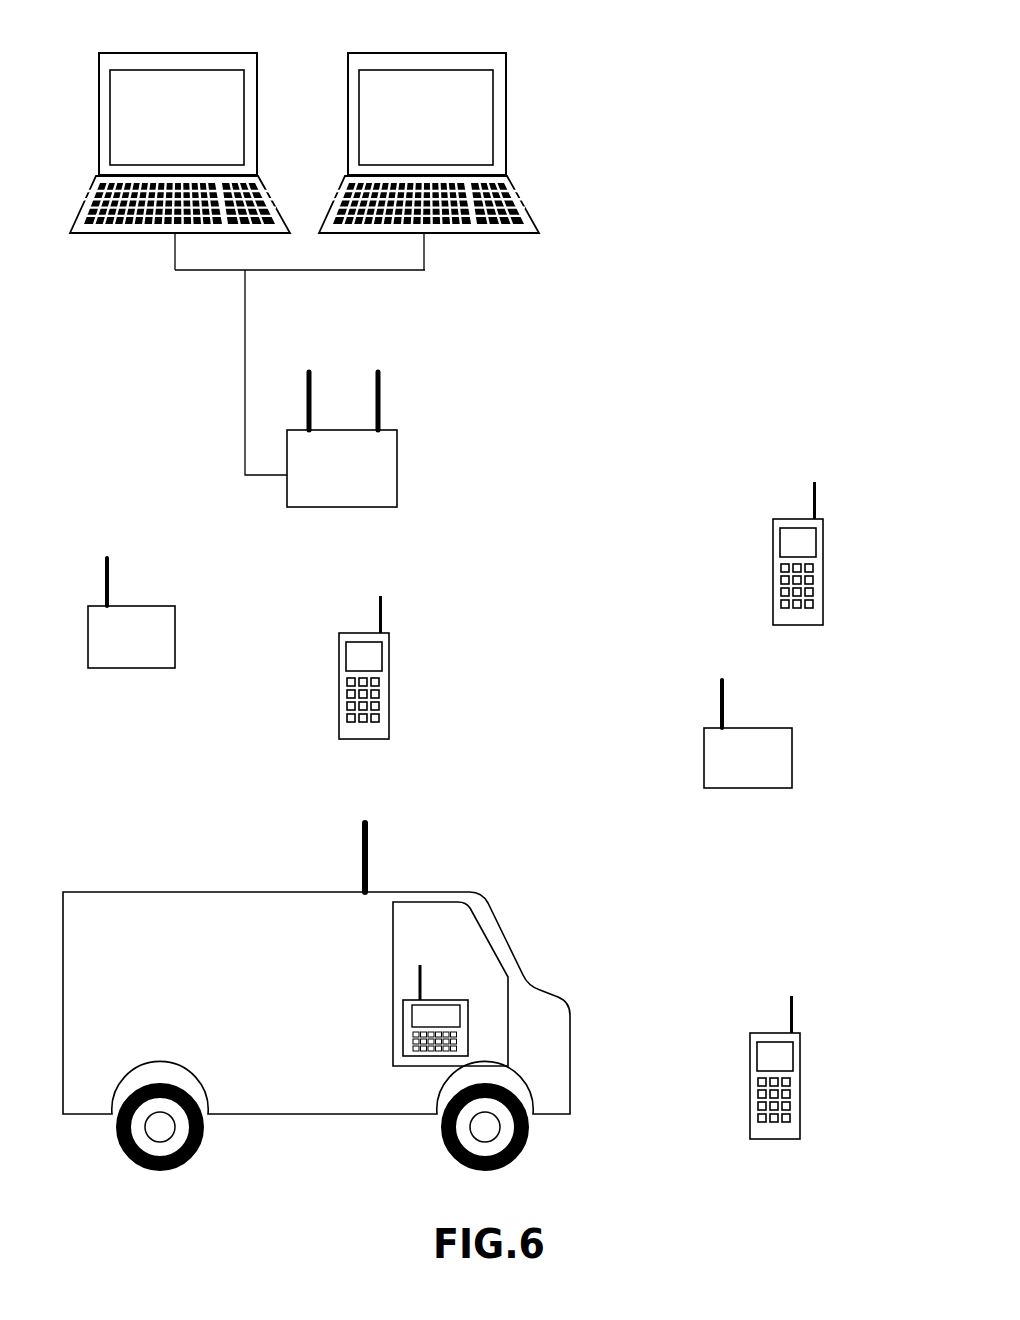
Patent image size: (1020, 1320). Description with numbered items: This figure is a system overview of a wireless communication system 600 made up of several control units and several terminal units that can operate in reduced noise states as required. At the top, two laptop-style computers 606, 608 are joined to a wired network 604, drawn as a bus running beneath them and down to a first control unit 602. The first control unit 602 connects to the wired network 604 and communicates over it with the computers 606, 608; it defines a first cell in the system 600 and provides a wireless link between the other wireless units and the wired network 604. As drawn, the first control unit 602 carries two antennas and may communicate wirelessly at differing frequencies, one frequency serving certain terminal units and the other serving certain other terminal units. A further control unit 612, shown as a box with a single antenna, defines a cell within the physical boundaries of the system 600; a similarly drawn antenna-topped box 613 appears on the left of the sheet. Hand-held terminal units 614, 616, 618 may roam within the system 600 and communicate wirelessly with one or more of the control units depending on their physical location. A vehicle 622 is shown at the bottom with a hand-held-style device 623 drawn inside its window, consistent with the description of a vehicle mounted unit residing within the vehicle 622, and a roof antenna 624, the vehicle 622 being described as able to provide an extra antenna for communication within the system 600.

The wireless communication system 600 is at (732, 263).
The first control unit 602 is at (398, 465).
The wired network 604 is at (337, 278).
The computer 606 is at (415, 50).
The computer 608 is at (157, 50).
The control unit 612 is at (738, 722).
The wireless device 613 is at (115, 602).
The hand-held terminal unit 614 is at (394, 676).
The hand-held terminal unit 616 is at (827, 553).
The hand-held terminal unit 618 is at (804, 1057).
The vehicle 622 is at (503, 935).
The in-vehicle wireless device 623 is at (432, 995).
The vehicle antenna 624 is at (372, 828).